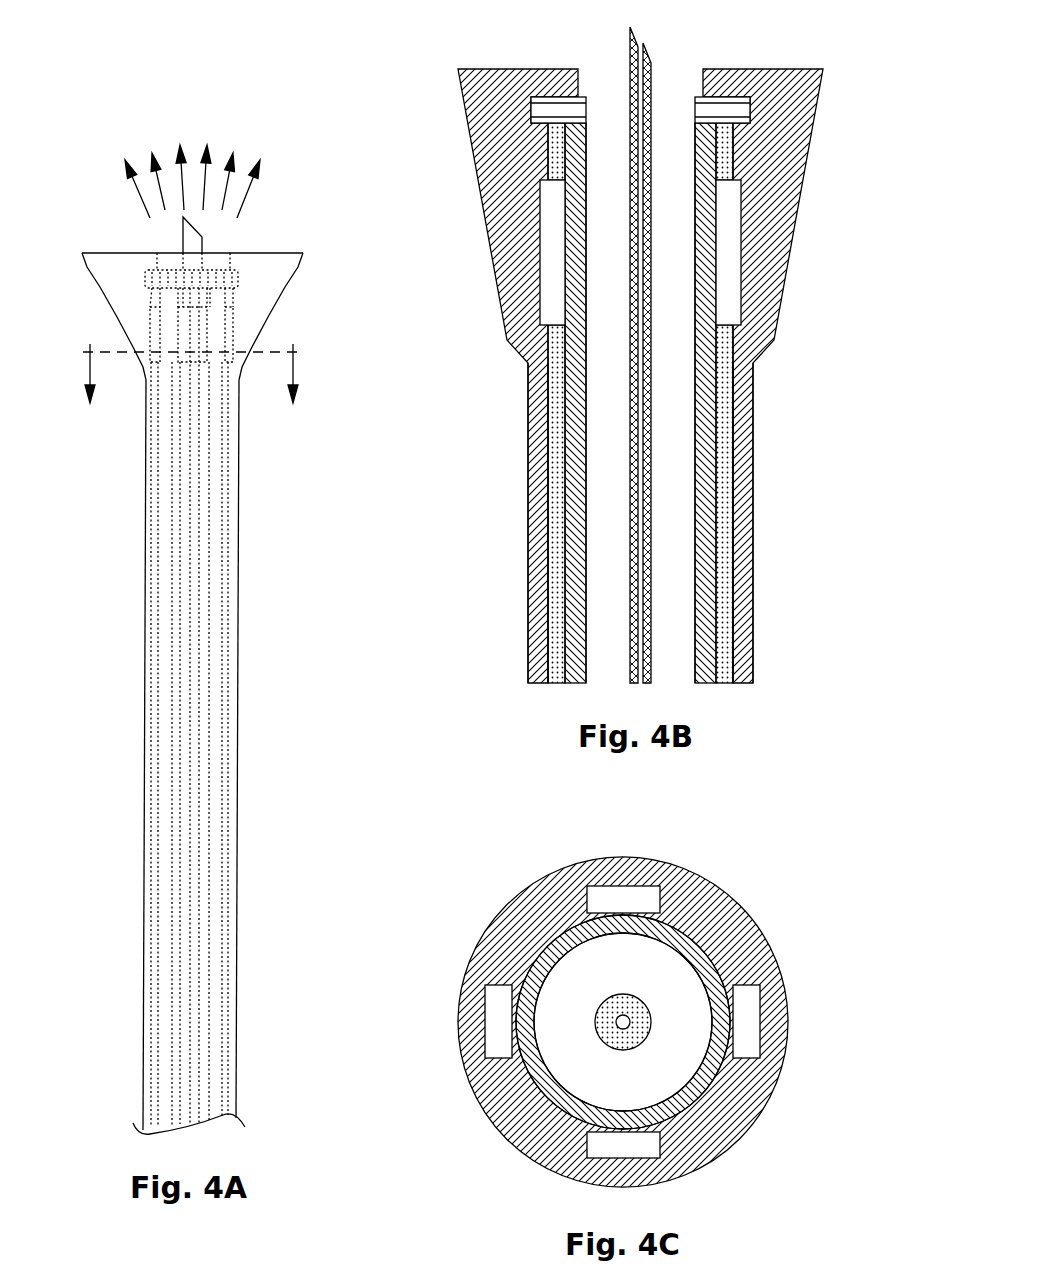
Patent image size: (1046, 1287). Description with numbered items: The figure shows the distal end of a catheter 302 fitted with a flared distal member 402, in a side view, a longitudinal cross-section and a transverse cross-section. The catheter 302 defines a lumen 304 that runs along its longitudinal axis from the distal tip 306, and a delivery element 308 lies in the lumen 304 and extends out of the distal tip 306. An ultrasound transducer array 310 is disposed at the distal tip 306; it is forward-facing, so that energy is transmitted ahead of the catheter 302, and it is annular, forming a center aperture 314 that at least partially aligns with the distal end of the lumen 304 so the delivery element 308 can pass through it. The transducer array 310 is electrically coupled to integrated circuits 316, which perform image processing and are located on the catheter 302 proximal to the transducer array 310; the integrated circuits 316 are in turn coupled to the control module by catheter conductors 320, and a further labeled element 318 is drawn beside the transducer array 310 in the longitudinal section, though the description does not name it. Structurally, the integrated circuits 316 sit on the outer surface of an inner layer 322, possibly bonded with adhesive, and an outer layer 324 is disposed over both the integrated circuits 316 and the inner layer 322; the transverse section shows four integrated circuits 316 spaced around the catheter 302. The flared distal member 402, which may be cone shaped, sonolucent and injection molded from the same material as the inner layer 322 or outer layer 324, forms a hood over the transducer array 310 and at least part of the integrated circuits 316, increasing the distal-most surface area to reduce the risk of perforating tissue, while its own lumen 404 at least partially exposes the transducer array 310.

In FIG. 4A, the catheter 302 is at (209, 639).
In FIG. 4B, the catheter 302 is at (649, 365).
In FIG. 4C, the catheter 302 is at (645, 1022).
In FIG. 4B, the lumen 304 is at (677, 396).
In FIG. 4C, the lumen 304 is at (562, 1072).
In FIG. 4A, the distal tip 306 is at (209, 289).
In FIG. 4B, the delivery element 308 is at (630, 73).
In FIG. 4C, the delivery element 308 is at (640, 1010).
In FIG. 4A, the ultrasound transducer array 310 is at (232, 280).
In FIG. 4B, the ultrasound transducer array 310 is at (755, 105).
In FIG. 4B, the center aperture 314 is at (679, 88).
In FIG. 4A, the integrated circuits 316 is at (228, 342).
In FIG. 4B, the integrated circuits 316 is at (735, 297).
In FIG. 4C, the integrated circuits 316 is at (633, 893).
In FIG. 4B, the wire 318 is at (730, 162).
In FIG. 4A, the catheter conductors 320 is at (160, 510).
In FIG. 4B, the catheter conductors 320 is at (722, 515).
In FIG. 4B, the inner layer 322 is at (693, 455).
In FIG. 4C, the inner layer 322 is at (550, 953).
In FIG. 4B, the outer layer 324 is at (735, 572).
In FIG. 4C, the outer layer 324 is at (558, 887).
In FIG. 4A, the flared distal member 402 is at (105, 277).
In FIG. 4B, the flared distal member 402 is at (500, 233).
In FIG. 4A, the lumen 404 is at (212, 260).